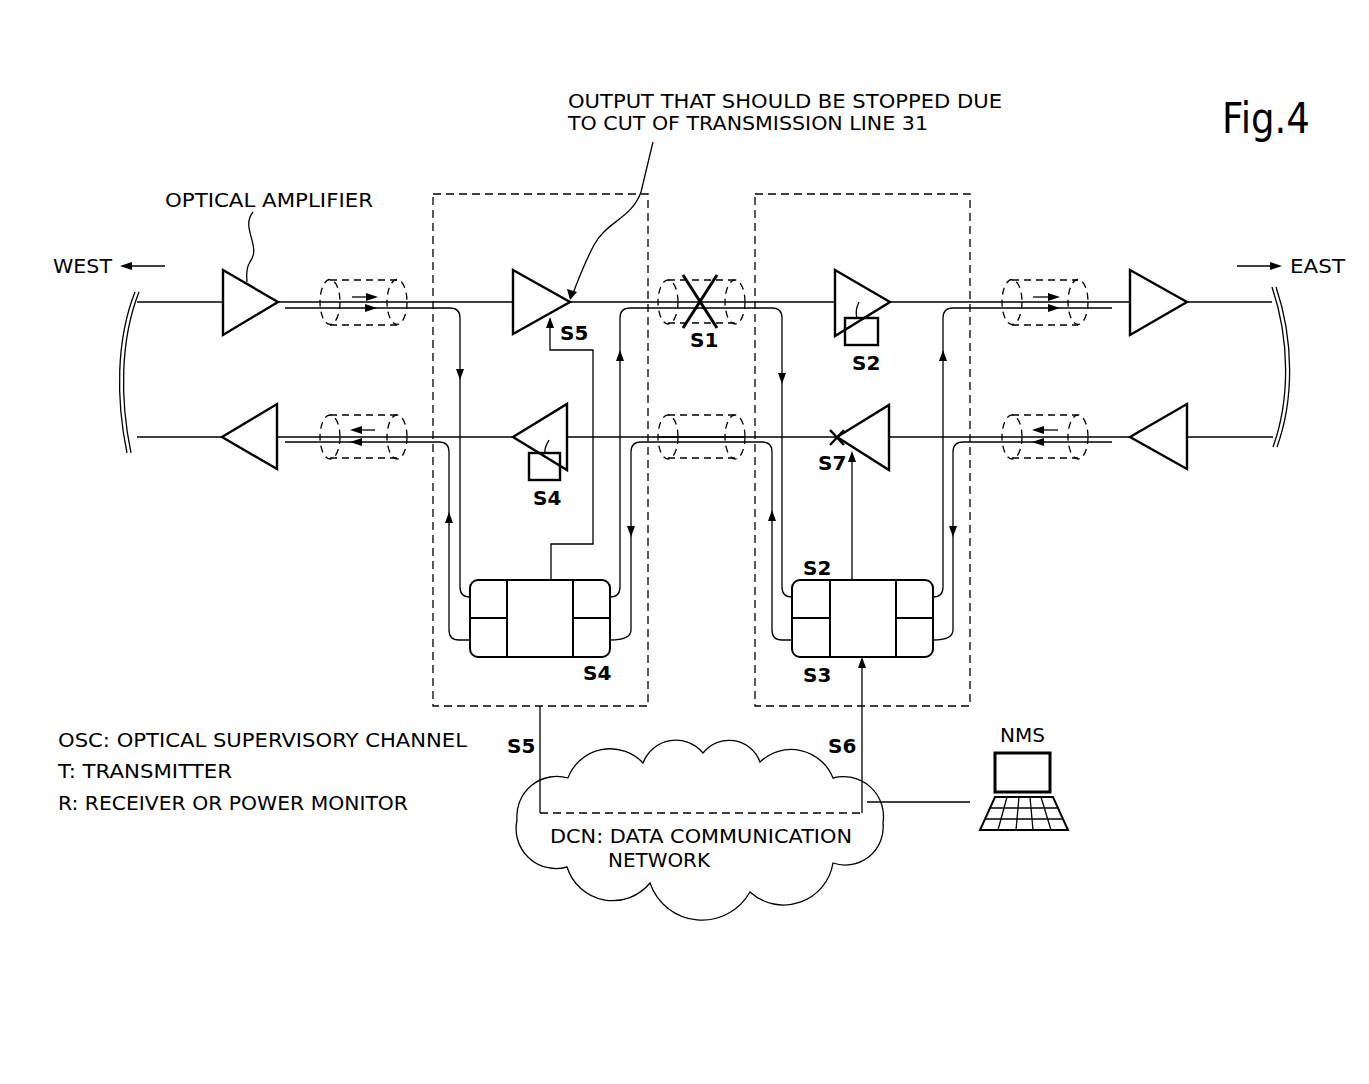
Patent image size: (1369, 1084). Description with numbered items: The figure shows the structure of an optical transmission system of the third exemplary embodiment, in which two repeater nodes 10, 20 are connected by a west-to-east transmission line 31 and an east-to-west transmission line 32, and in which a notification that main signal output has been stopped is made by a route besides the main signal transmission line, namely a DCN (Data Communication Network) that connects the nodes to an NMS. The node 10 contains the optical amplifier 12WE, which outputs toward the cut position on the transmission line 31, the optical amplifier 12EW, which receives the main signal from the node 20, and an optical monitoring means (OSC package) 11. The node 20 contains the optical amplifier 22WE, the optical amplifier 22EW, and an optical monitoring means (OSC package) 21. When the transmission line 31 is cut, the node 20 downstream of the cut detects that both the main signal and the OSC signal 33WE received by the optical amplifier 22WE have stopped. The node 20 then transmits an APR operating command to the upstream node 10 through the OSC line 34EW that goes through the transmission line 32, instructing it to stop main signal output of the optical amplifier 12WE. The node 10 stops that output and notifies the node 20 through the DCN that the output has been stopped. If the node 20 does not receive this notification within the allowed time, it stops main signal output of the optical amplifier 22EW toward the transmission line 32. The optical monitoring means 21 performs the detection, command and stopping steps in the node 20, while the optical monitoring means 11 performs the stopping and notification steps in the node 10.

The node 10 is at (487, 194).
The node 20 is at (810, 194).
The optical monitoring means (OSC package) 11 is at (517, 657).
The optical monitoring means (OSC package) 21 is at (885, 657).
The optical amplifier 12WE is at (523, 334).
The optical amplifier 12EW is at (540, 418).
The optical amplifier 22WE is at (868, 285).
The optical amplifier 22EW is at (858, 418).
The transmission line 31 is at (725, 282).
The transmission line 32 is at (725, 415).
The OSC signal 33WE is at (681, 313).
The OSC line 34EW is at (722, 455).